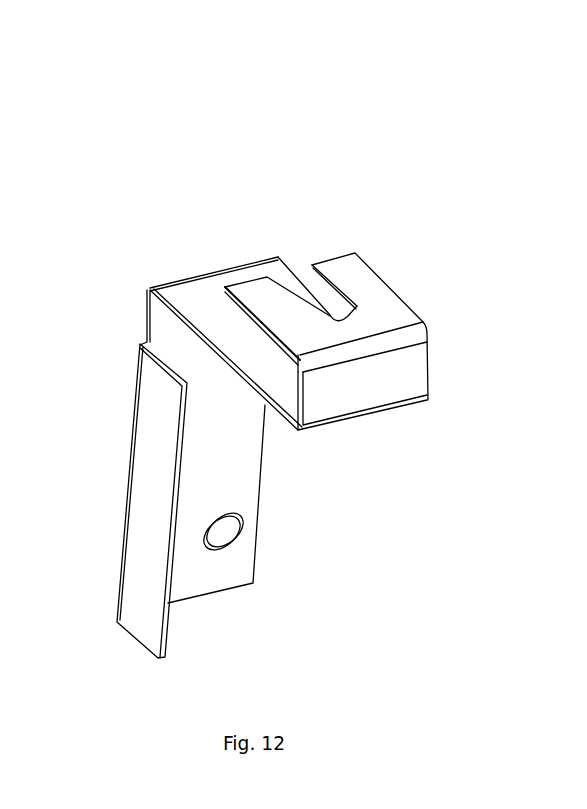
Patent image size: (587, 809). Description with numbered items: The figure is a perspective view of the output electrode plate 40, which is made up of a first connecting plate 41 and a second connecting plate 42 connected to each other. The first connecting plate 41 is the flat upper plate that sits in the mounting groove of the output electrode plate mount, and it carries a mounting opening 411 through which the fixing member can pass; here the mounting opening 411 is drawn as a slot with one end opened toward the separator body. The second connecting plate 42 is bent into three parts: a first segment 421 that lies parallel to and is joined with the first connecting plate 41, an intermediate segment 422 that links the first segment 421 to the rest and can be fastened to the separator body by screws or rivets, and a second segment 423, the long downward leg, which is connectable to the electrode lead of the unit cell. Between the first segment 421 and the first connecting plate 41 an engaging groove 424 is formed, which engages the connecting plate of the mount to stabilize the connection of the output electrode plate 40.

The output electrode plate 40 is at (268, 73).
The first connecting plate 41 is at (346, 298).
The mounting opening 411 is at (303, 264).
The second connecting plate 42 is at (61, 280).
The first segment 421 is at (148, 294).
The intermediate segment 422 is at (146, 324).
The second segment 423 is at (138, 369).
The engaging groove 424 is at (292, 407).